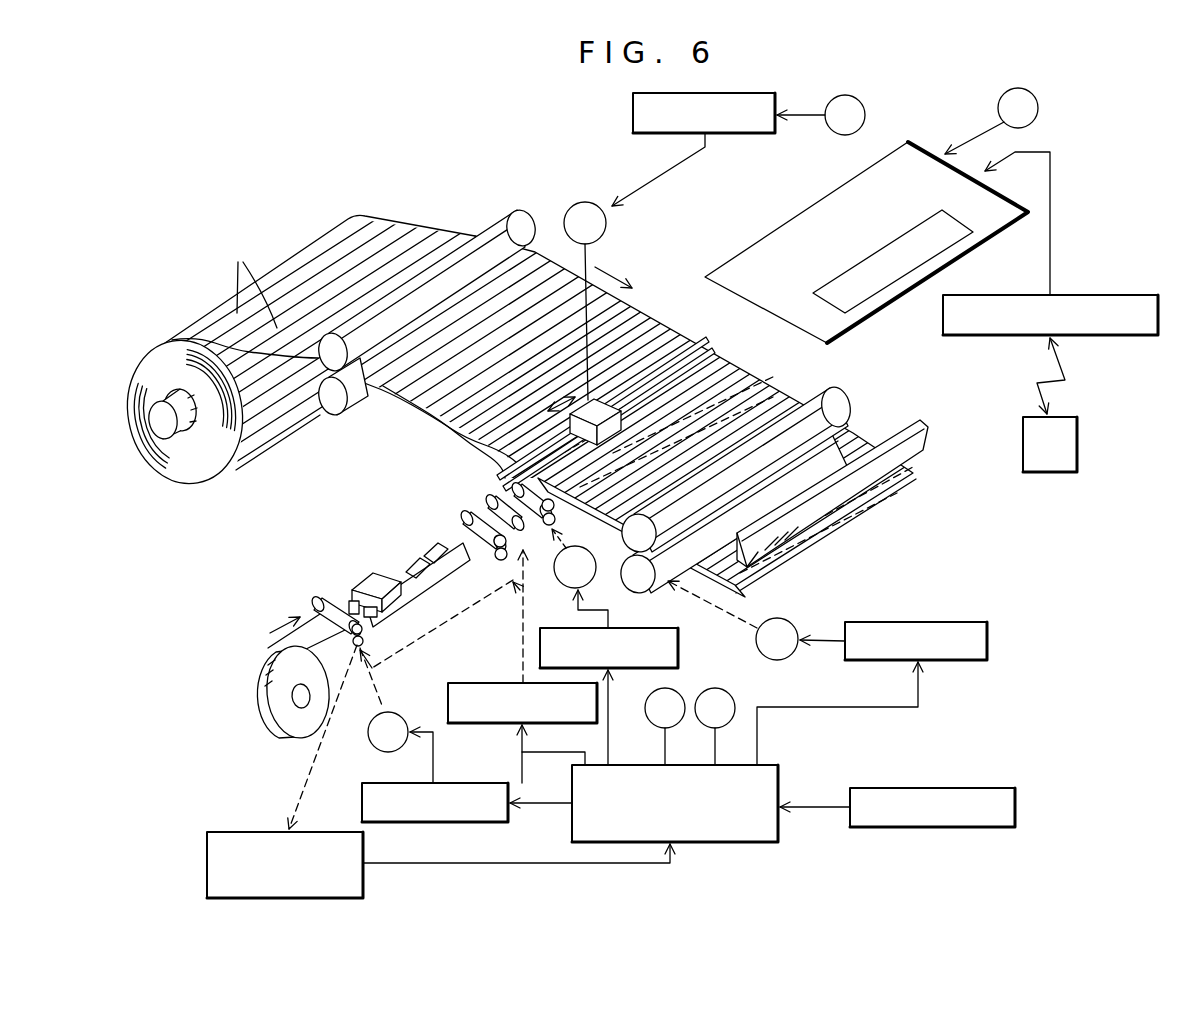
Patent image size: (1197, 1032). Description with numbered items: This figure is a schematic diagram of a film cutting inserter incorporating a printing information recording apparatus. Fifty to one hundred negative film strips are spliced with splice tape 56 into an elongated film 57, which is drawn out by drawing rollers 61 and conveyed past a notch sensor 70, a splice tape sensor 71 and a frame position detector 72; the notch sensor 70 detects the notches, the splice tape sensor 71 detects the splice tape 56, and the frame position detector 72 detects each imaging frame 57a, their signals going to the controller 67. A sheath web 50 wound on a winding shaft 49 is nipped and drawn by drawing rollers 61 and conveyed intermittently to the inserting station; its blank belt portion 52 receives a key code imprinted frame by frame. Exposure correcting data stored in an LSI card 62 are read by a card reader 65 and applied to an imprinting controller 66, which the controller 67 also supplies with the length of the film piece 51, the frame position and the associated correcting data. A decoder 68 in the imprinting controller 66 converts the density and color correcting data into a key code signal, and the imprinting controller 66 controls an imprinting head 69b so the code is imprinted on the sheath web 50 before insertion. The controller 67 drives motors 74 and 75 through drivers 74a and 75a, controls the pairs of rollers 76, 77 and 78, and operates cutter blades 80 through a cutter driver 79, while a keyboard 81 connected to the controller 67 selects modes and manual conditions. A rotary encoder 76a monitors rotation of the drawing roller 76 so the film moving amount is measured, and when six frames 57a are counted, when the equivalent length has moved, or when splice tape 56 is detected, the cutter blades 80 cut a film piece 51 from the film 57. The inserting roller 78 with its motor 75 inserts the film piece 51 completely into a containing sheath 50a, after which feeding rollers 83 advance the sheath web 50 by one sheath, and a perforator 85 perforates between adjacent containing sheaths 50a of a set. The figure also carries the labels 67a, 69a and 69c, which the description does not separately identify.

The winding shaft 49 is at (176, 440).
The sheath web 50 is at (440, 228).
The containing sheath 50a is at (392, 405).
The film piece 51 is at (770, 387).
The blank belt portion 52 is at (251, 282).
The splice tape 56 is at (466, 553).
The elongated film 57 is at (250, 703).
The imaging frame 57a is at (418, 555).
The drawing rollers 61 is at (520, 212).
The LSI card 62 is at (1080, 446).
The card reader 65 is at (1103, 293).
The imprinting controller 66 is at (793, 213).
The inserter controller 67 is at (775, 763).
The driver 67a is at (918, 622).
The decoder 68 is at (870, 297).
The print head 69a is at (597, 398).
The imprinting head 69b is at (712, 348).
The driver 69c is at (633, 112).
The notch sensor 70 is at (378, 612).
The splice tape sensor 71 is at (348, 600).
The frame position detector 72 is at (368, 578).
The motor 74 is at (404, 710).
The driver 74a is at (460, 782).
The motor 75 is at (593, 580).
The driver 75a is at (680, 657).
The drawing roller 76 is at (315, 608).
The rotary encoder 76a is at (250, 832).
The pair of rollers 77 is at (467, 522).
The inserting roller 78 is at (513, 495).
The cutter driver 79 is at (492, 683).
The cutter blades 80 is at (497, 500).
The keyboard 81 is at (925, 788).
The feeding rollers 83 is at (853, 400).
The perforator 85 is at (860, 483).